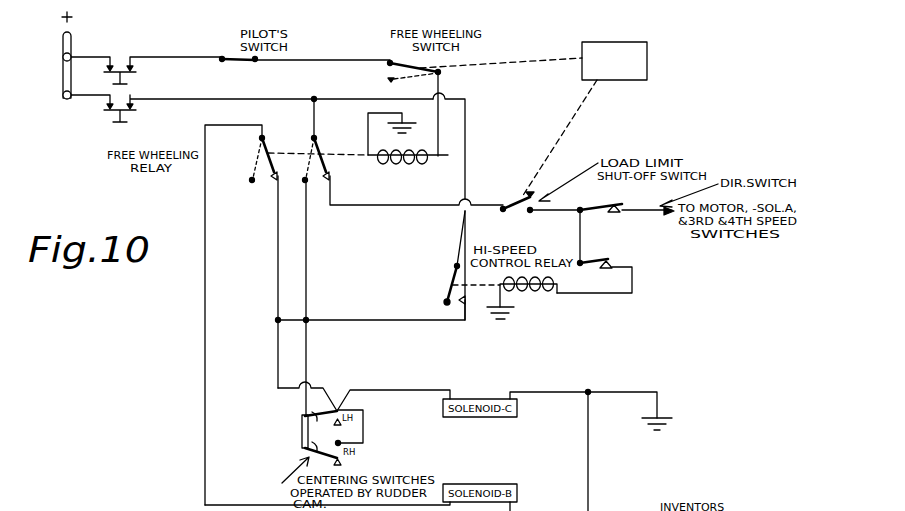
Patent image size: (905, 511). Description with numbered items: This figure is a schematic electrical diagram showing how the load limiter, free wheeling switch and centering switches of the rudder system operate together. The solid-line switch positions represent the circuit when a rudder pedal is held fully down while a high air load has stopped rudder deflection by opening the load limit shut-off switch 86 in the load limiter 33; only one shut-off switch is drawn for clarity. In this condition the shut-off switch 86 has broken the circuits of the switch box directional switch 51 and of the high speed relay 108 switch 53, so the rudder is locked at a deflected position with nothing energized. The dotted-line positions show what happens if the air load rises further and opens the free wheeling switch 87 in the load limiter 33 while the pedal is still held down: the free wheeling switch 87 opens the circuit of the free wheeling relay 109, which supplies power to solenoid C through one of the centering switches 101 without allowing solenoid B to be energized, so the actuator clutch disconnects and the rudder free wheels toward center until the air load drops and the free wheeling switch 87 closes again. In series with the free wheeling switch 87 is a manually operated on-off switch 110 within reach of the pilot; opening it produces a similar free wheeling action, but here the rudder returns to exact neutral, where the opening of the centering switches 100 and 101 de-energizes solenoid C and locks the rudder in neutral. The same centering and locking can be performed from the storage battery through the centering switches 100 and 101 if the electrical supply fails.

The manually operated on-off switch 110 is at (228, 37).
The free wheeling switch 87 is at (382, 45).
The load limiter 33 is at (640, 52).
The load limit shut-off switch 86 is at (534, 194).
The directional switch 51 is at (606, 213).
The high speed relay switch 53 is at (612, 263).
The high speed relay 108 is at (545, 296).
The free wheeling relay 109 is at (392, 166).
The centering switch 101 is at (310, 415).
The centering switch 100 is at (304, 448).